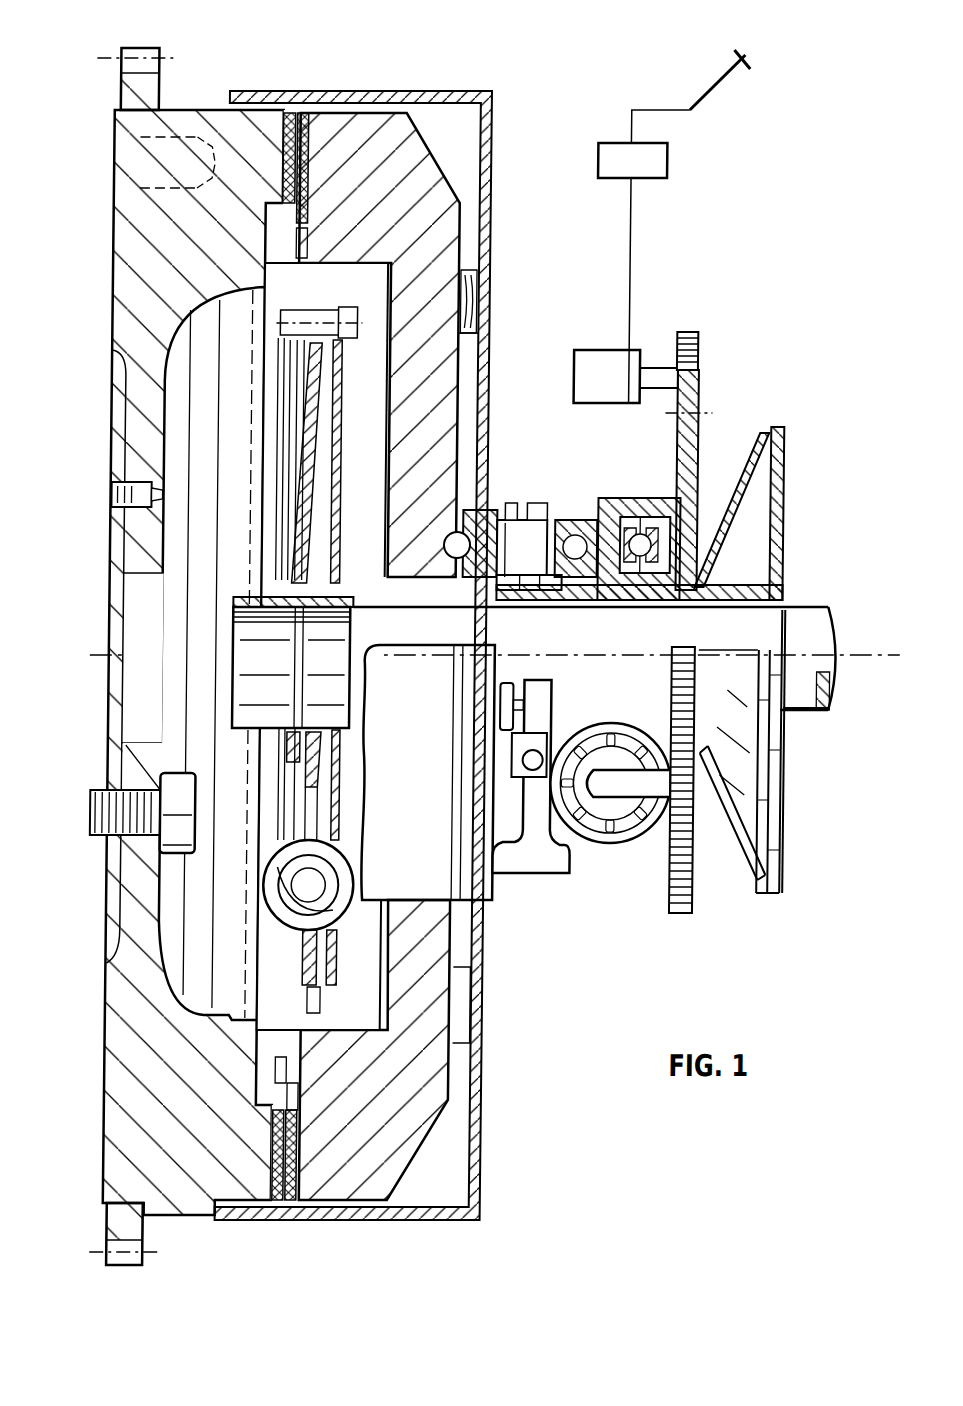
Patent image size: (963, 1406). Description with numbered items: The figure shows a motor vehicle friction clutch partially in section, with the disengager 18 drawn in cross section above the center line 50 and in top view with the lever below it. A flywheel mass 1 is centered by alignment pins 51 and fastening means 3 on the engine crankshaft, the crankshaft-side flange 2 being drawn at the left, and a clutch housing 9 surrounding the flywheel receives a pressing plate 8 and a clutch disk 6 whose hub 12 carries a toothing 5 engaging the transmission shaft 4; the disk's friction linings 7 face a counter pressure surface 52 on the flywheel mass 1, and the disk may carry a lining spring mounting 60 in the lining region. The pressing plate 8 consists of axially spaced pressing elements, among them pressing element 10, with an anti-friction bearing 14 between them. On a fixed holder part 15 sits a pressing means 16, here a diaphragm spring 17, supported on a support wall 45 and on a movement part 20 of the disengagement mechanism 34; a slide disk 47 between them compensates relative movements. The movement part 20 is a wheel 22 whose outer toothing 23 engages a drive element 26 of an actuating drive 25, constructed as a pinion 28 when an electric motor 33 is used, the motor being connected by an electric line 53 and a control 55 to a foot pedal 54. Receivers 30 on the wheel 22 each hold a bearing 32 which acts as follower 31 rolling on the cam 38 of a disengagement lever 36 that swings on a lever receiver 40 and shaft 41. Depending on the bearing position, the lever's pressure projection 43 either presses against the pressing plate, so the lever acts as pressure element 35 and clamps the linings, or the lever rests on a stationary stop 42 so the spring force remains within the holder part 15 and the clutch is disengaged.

The flywheel mass 1 is at (206, 1203).
The crankshaft flange 2 is at (150, 50).
The fastening means 3 is at (191, 800).
The transmission shaft 4 is at (818, 606).
The toothing 5 is at (247, 614).
The clutch disk 6 is at (326, 393).
The friction linings 7 is at (282, 130).
The pressing plate 8 is at (483, 515).
The clutch housing 9 is at (438, 93).
The pressing element 10 is at (447, 216).
The hub 12 is at (341, 693).
The anti-friction bearing 14 is at (450, 545).
The holder part 15 is at (786, 764).
The pressing means 16 is at (759, 803).
The diaphragm spring 17 is at (757, 482).
The disengager 18 is at (725, 364).
The movement part 20 is at (693, 464).
The wheel 22 is at (688, 440).
The outer toothing 23 is at (691, 914).
The actuating drive 25 is at (567, 352).
The drive element 26 is at (708, 340).
The pinion 28 is at (688, 331).
The receivers 30 is at (652, 503).
The follower 31 is at (610, 488).
The bearing 32 is at (573, 580).
The electric motor 33 is at (597, 350).
The disengagement mechanism 34 is at (530, 882).
The pressure element 35 is at (512, 840).
The disengagement lever 36 is at (512, 587).
The cam 38 is at (576, 838).
The lever receiver 40 is at (528, 763).
The shaft 41 is at (541, 780).
The stop 42 is at (518, 505).
The pressure projection 43 is at (512, 860).
The support wall 45 is at (784, 534).
The slide disk 47 is at (723, 542).
The center line 50 is at (875, 654).
The alignment pins 51 is at (157, 484).
The counter pressure surface 52 is at (290, 600).
The electric line 53 is at (661, 110).
The foot pedal 54 is at (751, 63).
The control 55 is at (662, 160).
The lining spring mounting 60 is at (316, 1150).